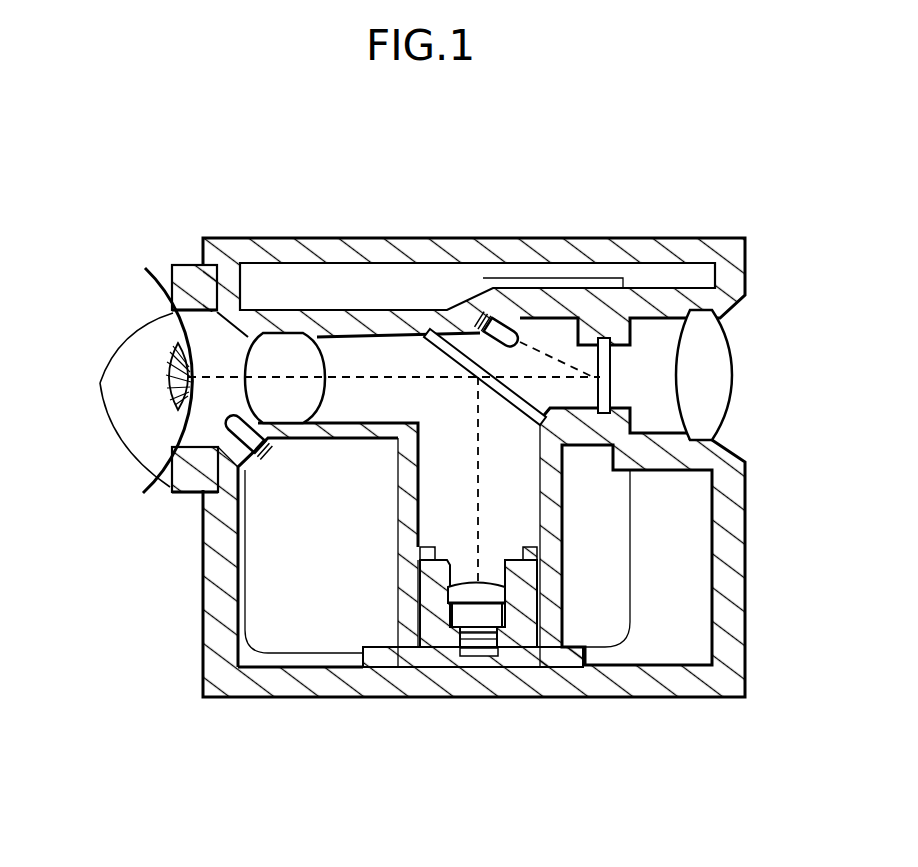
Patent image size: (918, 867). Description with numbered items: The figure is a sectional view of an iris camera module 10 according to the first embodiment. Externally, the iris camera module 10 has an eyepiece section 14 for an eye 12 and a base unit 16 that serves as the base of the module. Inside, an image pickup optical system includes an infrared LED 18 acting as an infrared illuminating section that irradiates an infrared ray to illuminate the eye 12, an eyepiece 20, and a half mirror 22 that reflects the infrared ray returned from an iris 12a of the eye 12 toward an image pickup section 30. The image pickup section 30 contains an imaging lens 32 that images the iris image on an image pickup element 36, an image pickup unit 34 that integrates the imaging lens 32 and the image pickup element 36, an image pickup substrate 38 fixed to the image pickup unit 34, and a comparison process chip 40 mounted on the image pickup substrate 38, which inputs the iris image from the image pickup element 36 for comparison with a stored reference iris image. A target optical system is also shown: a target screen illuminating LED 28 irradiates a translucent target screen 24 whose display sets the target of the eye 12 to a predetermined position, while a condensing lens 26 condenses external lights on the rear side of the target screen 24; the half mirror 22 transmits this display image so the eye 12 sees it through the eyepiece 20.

The iris camera module 10 is at (610, 188).
The eye 12 is at (142, 344).
The iris 12a is at (163, 383).
The eyepiece section 14 is at (181, 265).
The base unit 16 is at (430, 238).
The infrared LED 18 is at (257, 465).
The eyepiece 20 is at (323, 357).
The half mirror 22 is at (515, 407).
The target screen 24 is at (612, 383).
The condensing lens 26 is at (732, 349).
The target screen illuminating LED 28 is at (500, 318).
The image pickup section 30 is at (443, 532).
The imaging lens 32 is at (497, 581).
The image pickup unit 34 is at (520, 600).
The image pickup element 36 is at (492, 623).
The image pickup substrate 38 is at (550, 670).
The comparison process chip 40 is at (475, 657).